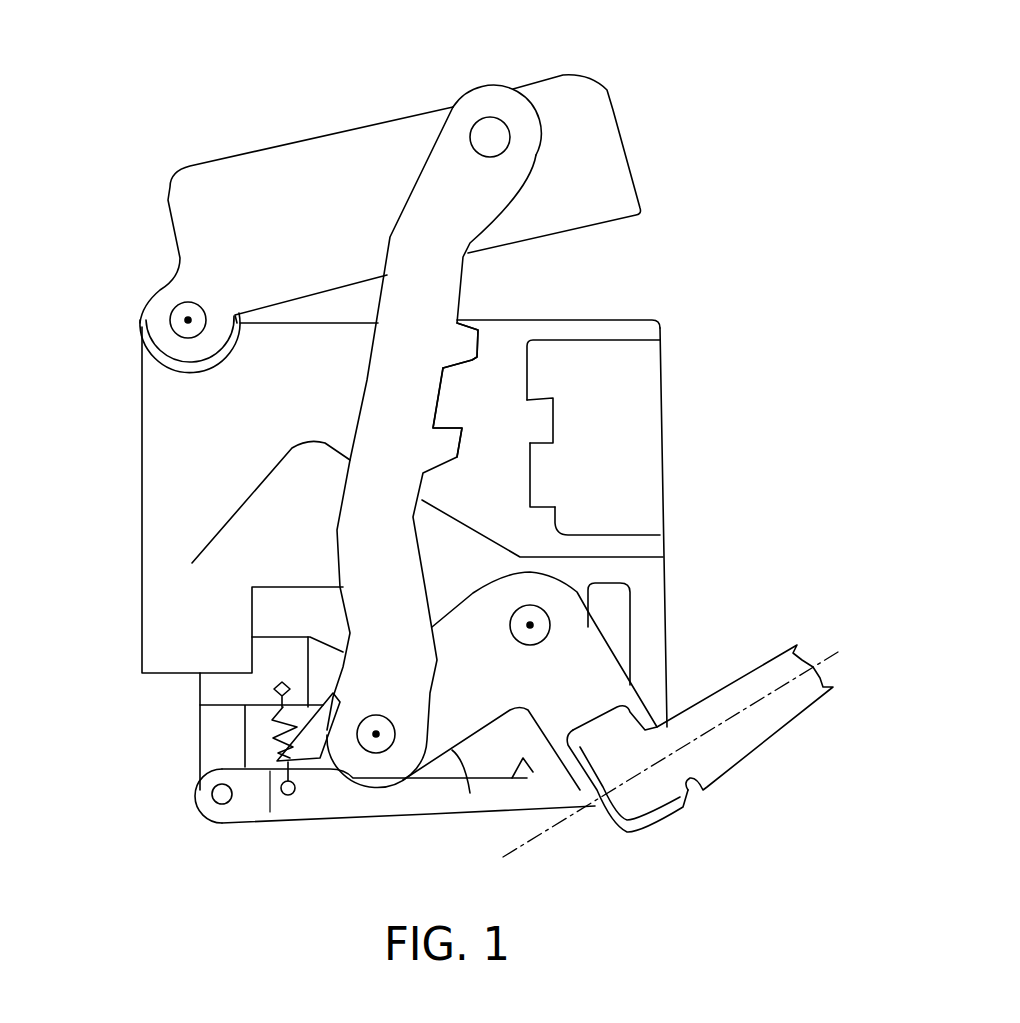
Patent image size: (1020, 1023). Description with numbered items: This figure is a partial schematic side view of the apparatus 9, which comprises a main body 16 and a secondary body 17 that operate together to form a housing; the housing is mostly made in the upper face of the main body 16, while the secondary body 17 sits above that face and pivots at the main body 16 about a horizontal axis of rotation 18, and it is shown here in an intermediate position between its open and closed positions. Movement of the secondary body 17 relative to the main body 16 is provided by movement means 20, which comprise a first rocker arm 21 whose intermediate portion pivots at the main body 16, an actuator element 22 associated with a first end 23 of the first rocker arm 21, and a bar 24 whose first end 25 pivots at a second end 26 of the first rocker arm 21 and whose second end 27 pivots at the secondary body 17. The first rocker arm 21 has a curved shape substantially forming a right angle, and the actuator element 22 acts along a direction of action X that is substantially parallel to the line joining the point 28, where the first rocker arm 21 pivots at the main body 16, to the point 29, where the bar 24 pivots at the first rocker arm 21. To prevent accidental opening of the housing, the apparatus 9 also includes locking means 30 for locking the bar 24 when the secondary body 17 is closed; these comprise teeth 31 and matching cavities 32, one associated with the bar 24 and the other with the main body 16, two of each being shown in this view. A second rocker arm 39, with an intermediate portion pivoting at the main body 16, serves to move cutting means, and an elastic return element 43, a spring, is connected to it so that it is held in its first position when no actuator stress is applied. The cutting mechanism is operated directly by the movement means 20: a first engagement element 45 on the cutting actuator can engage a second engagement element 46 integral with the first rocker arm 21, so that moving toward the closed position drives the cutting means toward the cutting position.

The apparatus 9 is at (759, 205).
The main body 16 is at (207, 465).
The secondary body 17 is at (327, 183).
The horizontal axis of rotation 18 is at (187, 320).
The movement means 20 is at (445, 545).
The first rocker arm 21 is at (587, 677).
The actuator element 22 is at (722, 740).
The first end of the first rocker arm 23 is at (623, 822).
The bar 24 is at (380, 558).
The first end of the bar 25 is at (347, 743).
The second end of the first rocker arm 26 is at (377, 785).
The second end of the bar 27 is at (455, 120).
The pivot point of the first rocker arm at the main body 28 is at (532, 623).
The pivot point of the bar at the first rocker arm 29 is at (373, 736).
The locking means 30 is at (613, 401).
The tooth 31 is at (460, 343).
The cavity 32 is at (545, 400).
The second rocker arm 39 is at (217, 737).
The elastic return element 43 is at (287, 708).
The first engagement element 45 is at (523, 762).
The second engagement element 46 is at (452, 750).
The direction of action X is at (753, 705).